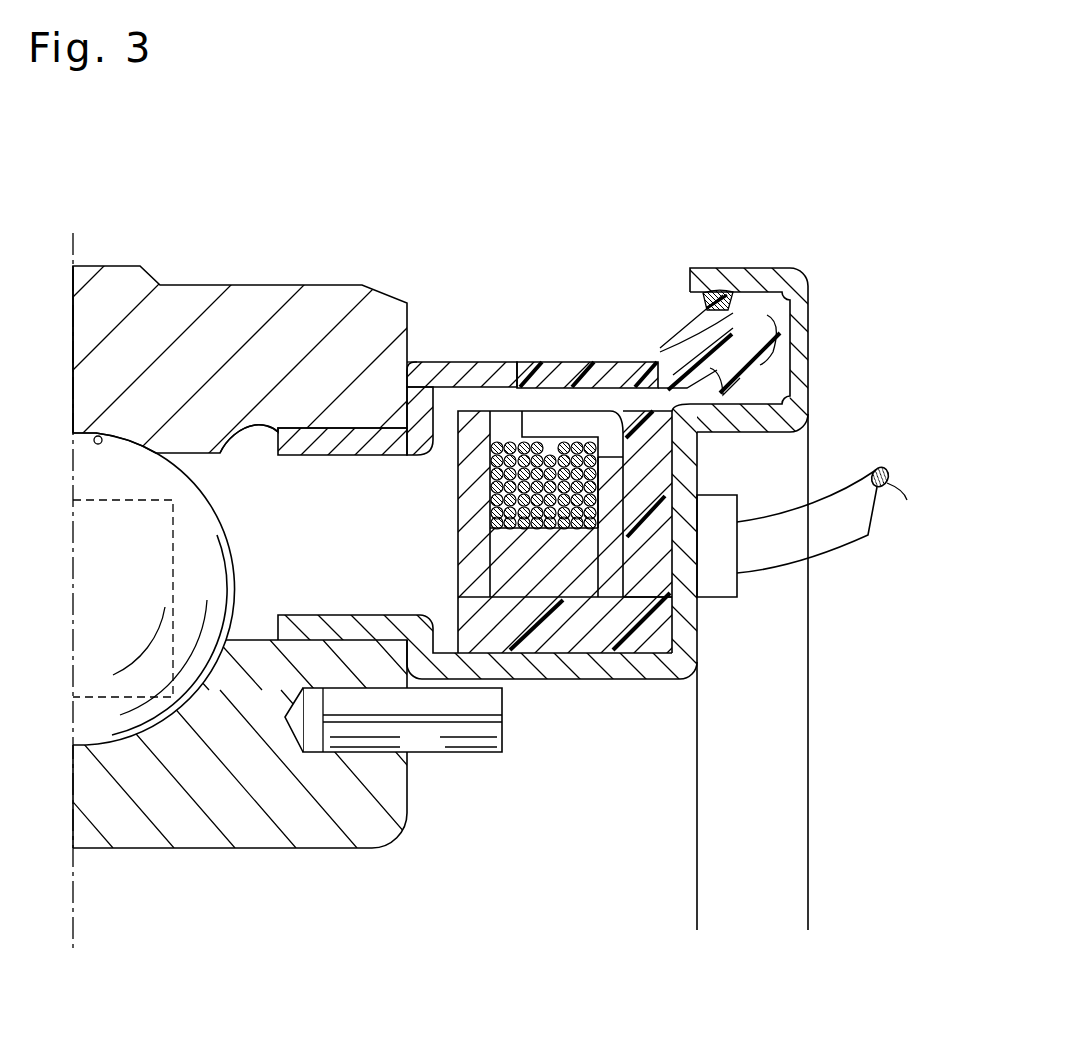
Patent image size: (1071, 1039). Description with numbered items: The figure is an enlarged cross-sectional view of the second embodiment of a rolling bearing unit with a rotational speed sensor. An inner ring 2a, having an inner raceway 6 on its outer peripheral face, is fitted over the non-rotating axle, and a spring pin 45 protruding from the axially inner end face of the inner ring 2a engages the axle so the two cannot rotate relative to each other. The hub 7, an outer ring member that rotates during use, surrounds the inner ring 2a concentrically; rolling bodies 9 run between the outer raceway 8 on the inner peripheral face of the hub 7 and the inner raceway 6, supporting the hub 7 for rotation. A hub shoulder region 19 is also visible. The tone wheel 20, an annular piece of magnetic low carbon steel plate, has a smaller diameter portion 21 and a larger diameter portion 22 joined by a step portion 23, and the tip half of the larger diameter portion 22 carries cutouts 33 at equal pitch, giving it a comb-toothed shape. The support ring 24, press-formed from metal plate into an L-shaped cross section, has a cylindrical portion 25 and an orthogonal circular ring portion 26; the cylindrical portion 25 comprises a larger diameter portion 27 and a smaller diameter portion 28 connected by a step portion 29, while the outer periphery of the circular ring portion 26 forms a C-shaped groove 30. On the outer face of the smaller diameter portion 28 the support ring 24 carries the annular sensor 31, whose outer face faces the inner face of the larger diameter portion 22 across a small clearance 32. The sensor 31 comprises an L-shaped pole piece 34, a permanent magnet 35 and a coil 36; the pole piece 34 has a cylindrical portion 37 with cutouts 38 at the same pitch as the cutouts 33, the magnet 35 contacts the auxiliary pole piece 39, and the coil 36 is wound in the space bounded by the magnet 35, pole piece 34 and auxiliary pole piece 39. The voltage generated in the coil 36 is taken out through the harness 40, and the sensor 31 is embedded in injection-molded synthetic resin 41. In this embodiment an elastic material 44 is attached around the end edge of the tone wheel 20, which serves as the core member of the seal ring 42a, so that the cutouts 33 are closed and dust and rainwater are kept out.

The inner ring 2a is at (298, 805).
The inner raceway 6 is at (180, 785).
The hub 7 is at (163, 337).
The outer raceway 8 is at (97, 436).
The rolling body 9 is at (98, 700).
The shoulder of hub 19 is at (237, 470).
The tone wheel 20 is at (477, 373).
The smaller diameter portion 21 is at (295, 440).
The larger diameter portion 22 is at (463, 377).
The step portion 23 is at (413, 397).
The support ring 24 is at (683, 628).
The cylindrical portion 25 is at (622, 673).
The circular ring portion 26 is at (647, 505).
The larger diameter portion 27 is at (343, 630).
The smaller diameter portion 28 is at (660, 673).
The step portion 29 is at (430, 700).
The groove 30 is at (787, 268).
The sensor 31 is at (528, 618).
The clearance 32 is at (520, 397).
The cutout 33 is at (547, 423).
The pole piece 34 is at (697, 518).
The permanent magnet 35 is at (510, 550).
The coil 36 is at (597, 470).
The cylindrical portion 37 is at (673, 357).
The cutout 38 is at (585, 420).
The auxiliary pole piece 39 is at (475, 500).
The harness 40 is at (860, 523).
The synthetic resin 41 is at (600, 633).
The seal ring 42a is at (660, 355).
The elastic material 44 is at (728, 293).
The spring pin 45 is at (492, 748).